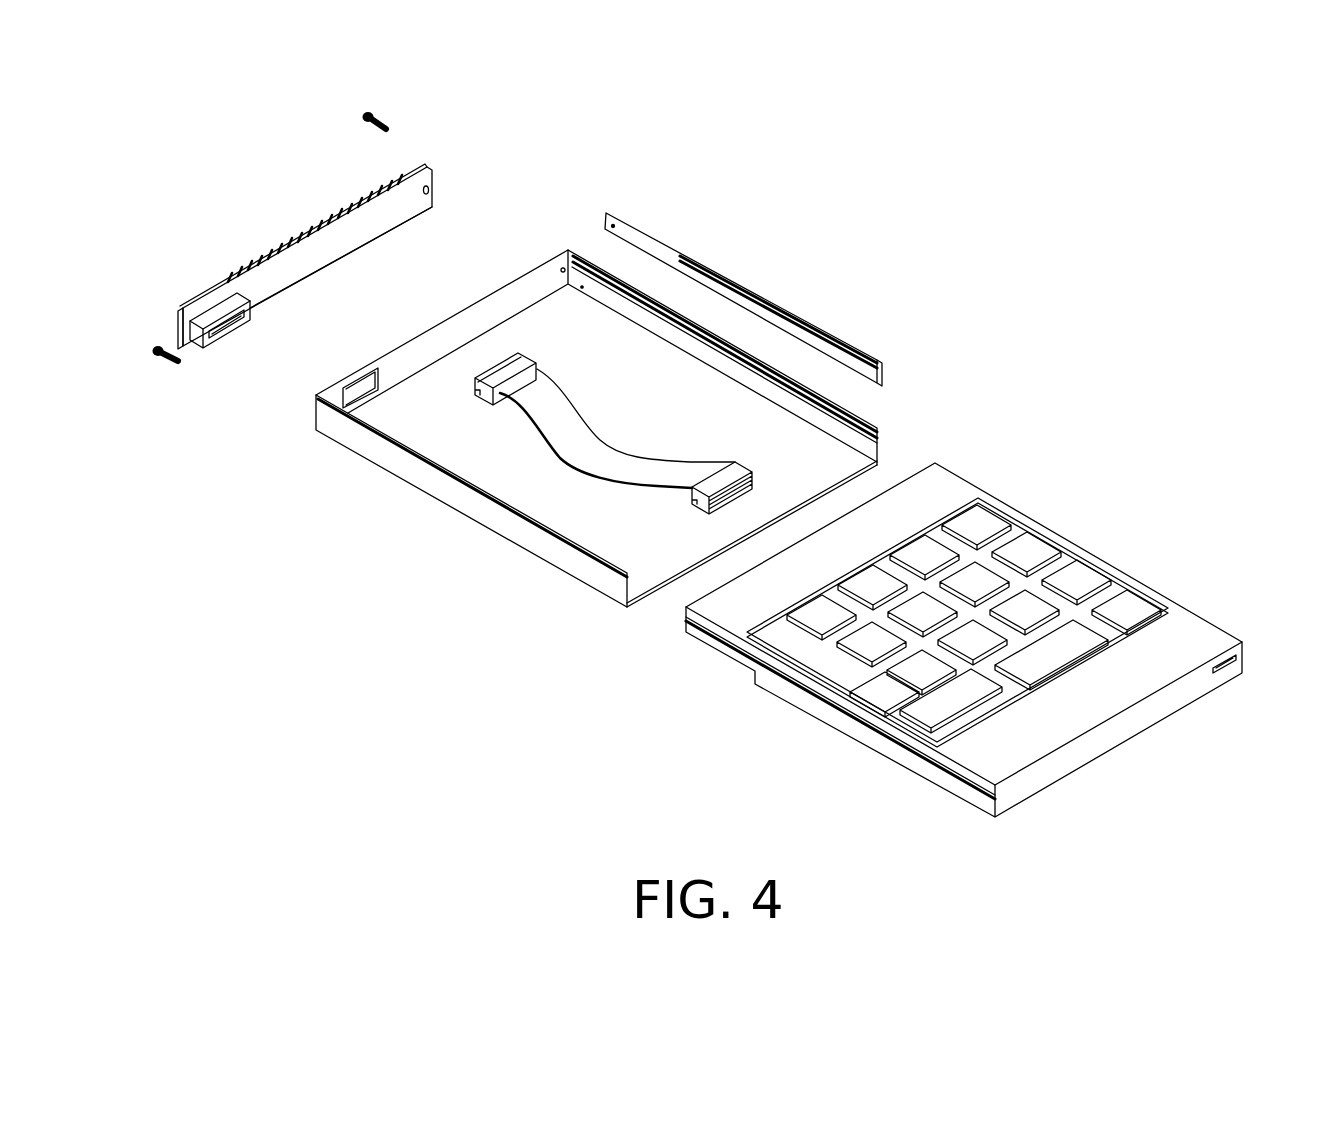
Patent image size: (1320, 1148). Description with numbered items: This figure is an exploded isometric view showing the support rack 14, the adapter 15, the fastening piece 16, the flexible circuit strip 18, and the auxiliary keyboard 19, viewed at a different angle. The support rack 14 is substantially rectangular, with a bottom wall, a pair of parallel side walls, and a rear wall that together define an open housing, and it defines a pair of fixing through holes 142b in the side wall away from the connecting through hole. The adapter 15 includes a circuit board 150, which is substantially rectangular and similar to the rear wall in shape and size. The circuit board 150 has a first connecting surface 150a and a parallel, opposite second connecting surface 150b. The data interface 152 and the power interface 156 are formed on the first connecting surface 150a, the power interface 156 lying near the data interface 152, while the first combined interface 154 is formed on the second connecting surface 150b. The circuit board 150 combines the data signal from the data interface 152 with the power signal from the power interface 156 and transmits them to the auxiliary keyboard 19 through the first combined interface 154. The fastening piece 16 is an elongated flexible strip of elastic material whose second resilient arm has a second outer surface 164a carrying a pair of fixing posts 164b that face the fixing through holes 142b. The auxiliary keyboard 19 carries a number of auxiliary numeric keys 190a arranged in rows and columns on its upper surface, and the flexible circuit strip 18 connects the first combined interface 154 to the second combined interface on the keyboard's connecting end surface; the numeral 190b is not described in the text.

The support rack 14 is at (577, 512).
The adapter 15 is at (434, 150).
The fastening piece 16 is at (800, 266).
The flexible circuit strip 18 is at (563, 428).
The auxiliary keyboard 19 is at (1173, 628).
The fixing through holes 142b is at (793, 403).
The circuit board 150 is at (431, 168).
The first connecting surface 150a is at (410, 212).
The second connecting surface 150b is at (170, 300).
The data interface 152 is at (257, 254).
The first combined interface 154 is at (214, 314).
The power interface 156 is at (328, 212).
The second outer surface 164a is at (652, 247).
The fixing posts 164b is at (818, 347).
The auxiliary numeric keys 190a is at (1032, 547).
The space key 190b is at (925, 717).